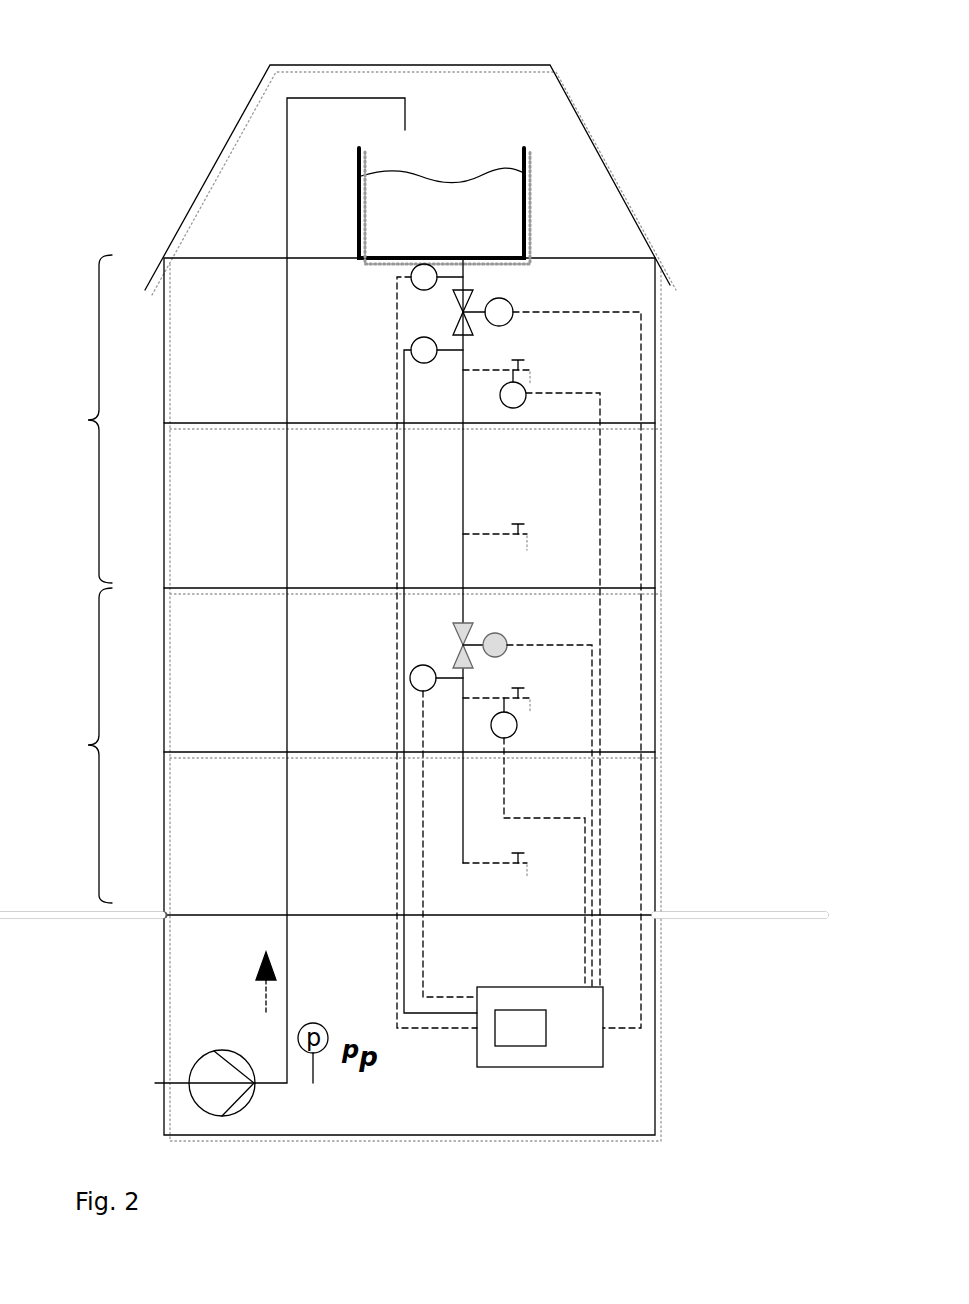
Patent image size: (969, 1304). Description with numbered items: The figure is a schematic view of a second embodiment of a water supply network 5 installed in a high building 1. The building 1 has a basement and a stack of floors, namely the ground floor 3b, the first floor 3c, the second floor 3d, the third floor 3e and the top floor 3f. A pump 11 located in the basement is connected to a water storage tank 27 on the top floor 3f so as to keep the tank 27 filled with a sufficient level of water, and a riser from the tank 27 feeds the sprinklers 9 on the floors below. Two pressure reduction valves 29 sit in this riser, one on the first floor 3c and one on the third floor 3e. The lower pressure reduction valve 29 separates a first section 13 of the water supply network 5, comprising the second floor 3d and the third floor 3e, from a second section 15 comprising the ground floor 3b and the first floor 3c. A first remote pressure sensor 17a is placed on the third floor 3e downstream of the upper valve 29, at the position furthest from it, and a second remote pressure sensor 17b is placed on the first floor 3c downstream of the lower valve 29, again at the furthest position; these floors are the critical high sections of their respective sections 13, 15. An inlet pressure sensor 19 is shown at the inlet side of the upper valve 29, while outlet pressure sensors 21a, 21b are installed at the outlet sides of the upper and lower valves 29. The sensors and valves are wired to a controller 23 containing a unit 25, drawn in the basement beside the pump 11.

The high building 1 is at (221, 108).
The ground floor 3b is at (655, 810).
The first floor 3c is at (655, 655).
The second floor 3d is at (655, 492).
The third floor 3e is at (655, 348).
The top floor 3f is at (614, 190).
The water supply network 5 is at (314, 817).
The sprinkler 9 is at (524, 369).
The pump 11 is at (200, 1055).
The first section 13 is at (82, 419).
The second section 15 is at (82, 745).
The first remote pressure sensor 17a is at (523, 405).
The second remote pressure sensor 17b is at (516, 732).
The inlet pressure sensor 19 is at (411, 272).
The outlet pressure sensor 21a is at (430, 363).
The outlet pressure sensor 21b is at (410, 674).
The controller 23 is at (540, 1051).
The memory 25 is at (546, 1015).
The water storage tank 27 is at (524, 187).
The pressure reduction valve 29 is at (478, 291).